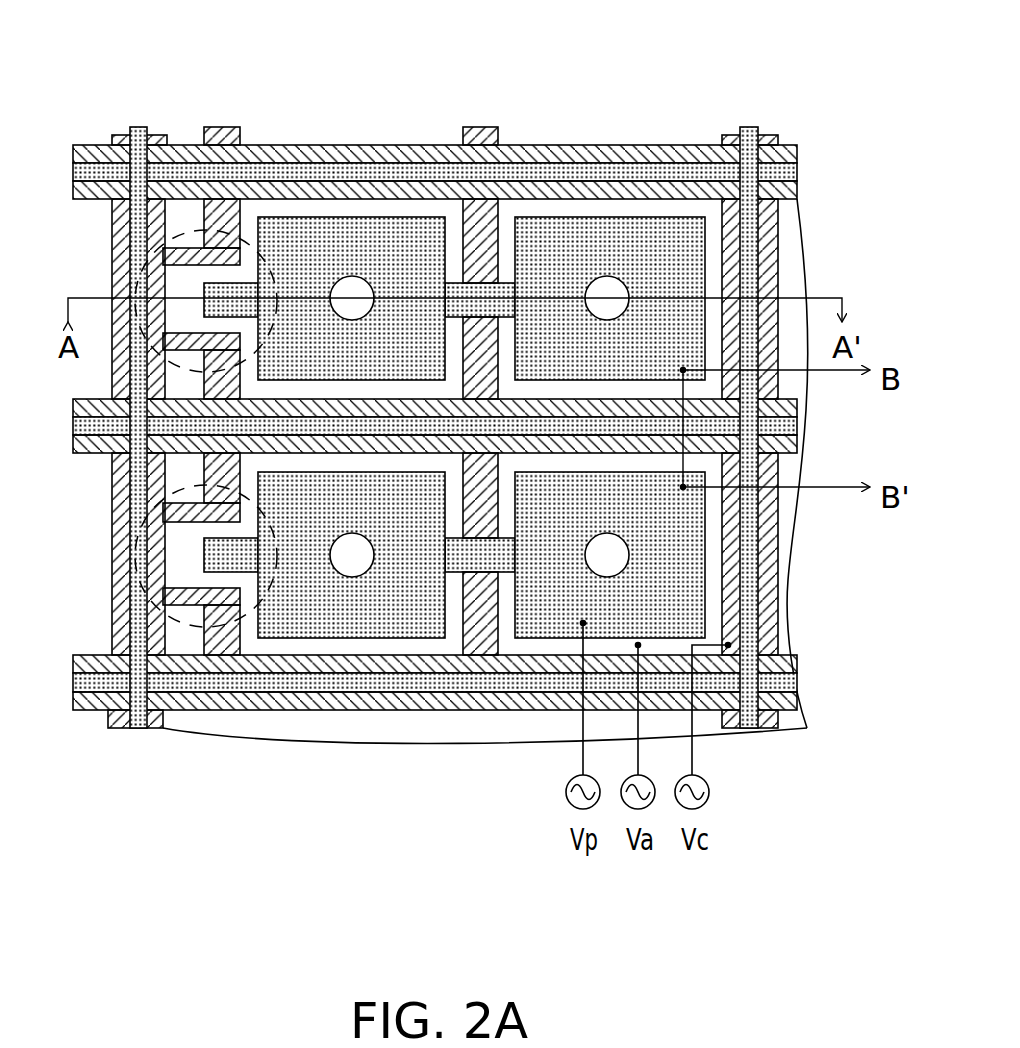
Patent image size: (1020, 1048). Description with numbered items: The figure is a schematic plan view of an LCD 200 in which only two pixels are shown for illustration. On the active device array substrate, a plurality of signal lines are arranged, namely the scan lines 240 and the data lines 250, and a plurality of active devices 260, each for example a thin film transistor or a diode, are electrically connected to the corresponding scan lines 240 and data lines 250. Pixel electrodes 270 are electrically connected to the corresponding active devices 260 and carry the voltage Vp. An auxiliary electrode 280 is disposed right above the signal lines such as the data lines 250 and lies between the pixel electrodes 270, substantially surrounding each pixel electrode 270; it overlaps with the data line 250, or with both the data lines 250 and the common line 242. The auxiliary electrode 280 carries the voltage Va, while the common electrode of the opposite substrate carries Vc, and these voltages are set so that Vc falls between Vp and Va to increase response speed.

The LCD 200 is at (862, 910).
The scan line 240 is at (230, 127).
The common line 242 is at (118, 135).
The data line 250 is at (798, 150).
The active device 260 is at (135, 256).
The pixel electrode 270 is at (595, 245).
The auxiliary electrode 280 is at (748, 127).